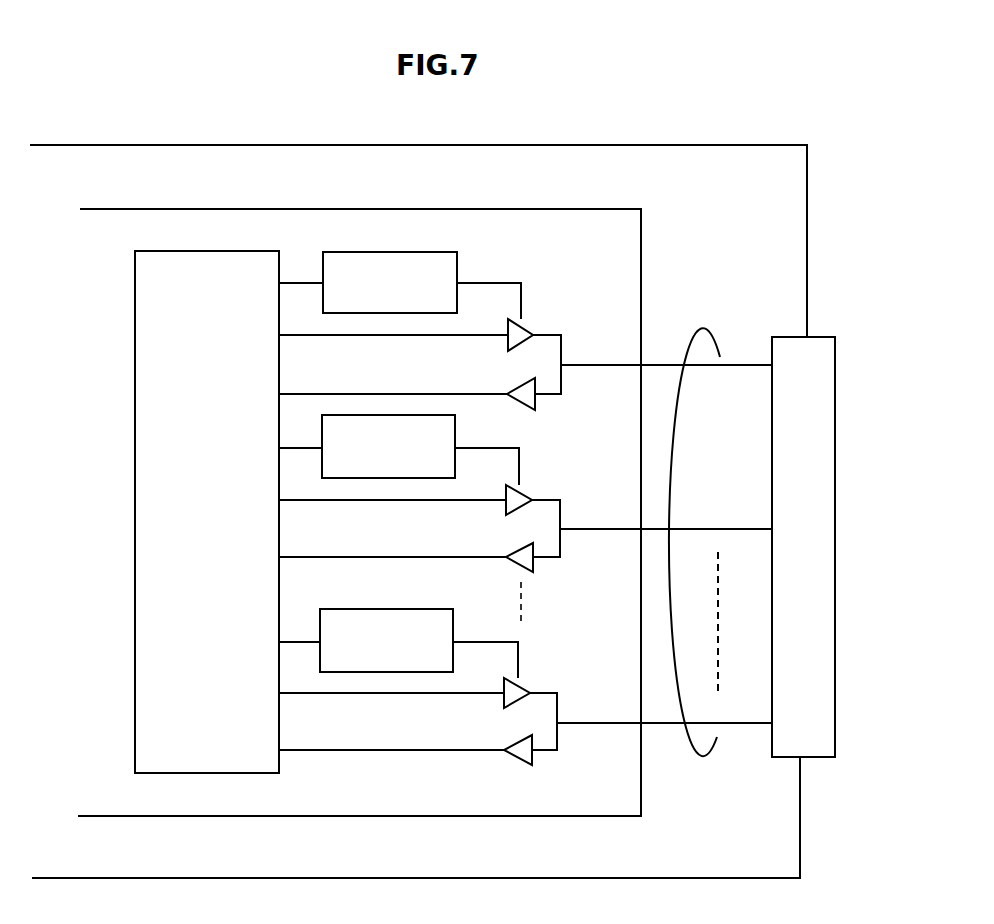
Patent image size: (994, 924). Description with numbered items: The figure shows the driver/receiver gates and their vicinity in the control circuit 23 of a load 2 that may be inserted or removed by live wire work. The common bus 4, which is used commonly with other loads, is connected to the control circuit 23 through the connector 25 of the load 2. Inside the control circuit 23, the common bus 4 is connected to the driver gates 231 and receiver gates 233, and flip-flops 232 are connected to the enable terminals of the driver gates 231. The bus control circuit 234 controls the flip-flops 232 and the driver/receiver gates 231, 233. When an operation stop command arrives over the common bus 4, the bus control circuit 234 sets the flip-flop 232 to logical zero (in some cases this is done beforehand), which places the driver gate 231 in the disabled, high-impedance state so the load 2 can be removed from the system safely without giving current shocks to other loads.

The load 2 is at (807, 205).
The control circuit 23 is at (641, 250).
The connector 25 is at (830, 337).
The common bus 4 is at (705, 760).
The driver gate 231 is at (530, 331).
The flip-flop 232 is at (457, 264).
The receiver gate 233 is at (536, 402).
The bus control circuit 234 is at (135, 740).